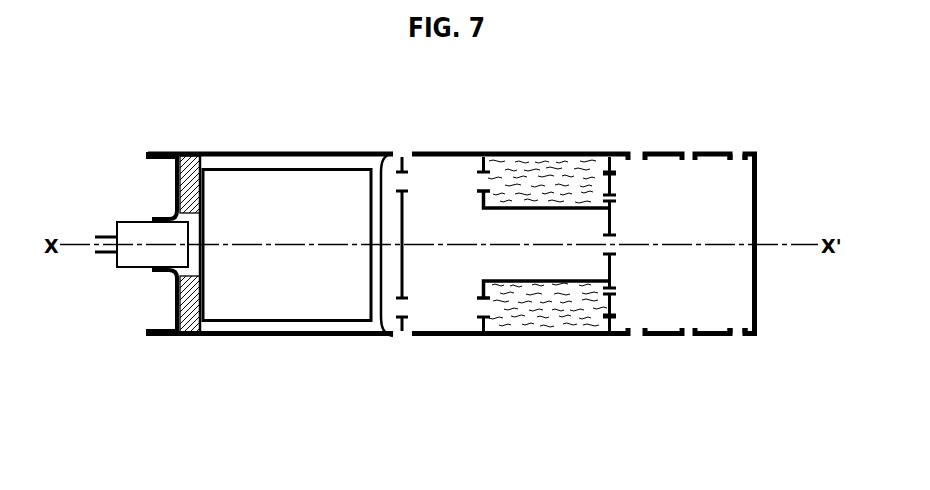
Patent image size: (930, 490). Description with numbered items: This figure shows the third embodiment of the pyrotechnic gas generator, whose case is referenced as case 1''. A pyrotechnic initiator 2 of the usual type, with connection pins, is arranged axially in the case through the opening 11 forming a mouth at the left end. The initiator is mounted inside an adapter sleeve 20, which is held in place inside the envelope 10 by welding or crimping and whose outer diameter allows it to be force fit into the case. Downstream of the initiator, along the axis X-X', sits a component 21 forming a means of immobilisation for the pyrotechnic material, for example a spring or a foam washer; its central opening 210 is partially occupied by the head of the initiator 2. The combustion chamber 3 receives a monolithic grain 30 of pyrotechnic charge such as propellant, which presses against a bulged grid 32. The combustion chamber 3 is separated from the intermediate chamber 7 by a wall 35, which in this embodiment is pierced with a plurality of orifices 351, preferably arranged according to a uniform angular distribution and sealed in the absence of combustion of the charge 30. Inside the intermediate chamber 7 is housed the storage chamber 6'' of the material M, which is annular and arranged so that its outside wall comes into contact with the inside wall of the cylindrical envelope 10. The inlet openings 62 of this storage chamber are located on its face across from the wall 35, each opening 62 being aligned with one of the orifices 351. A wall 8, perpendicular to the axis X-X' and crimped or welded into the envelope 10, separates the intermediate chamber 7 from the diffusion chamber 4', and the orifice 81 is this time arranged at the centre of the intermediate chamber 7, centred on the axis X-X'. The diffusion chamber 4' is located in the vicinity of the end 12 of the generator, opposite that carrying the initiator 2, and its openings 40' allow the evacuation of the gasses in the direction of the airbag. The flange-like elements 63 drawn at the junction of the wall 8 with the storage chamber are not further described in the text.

The case 1'' is at (427, 303).
The pyrotechnic initiator 2 is at (138, 230).
The combustion chamber 3 is at (323, 158).
The diffusion chamber 4' is at (712, 245).
The storage chamber of the material 6'' is at (548, 328).
The intermediate chamber 7 is at (443, 186).
The wall 8 is at (607, 305).
The envelope 10 is at (535, 157).
The opening 11 is at (161, 302).
The end 12 is at (760, 285).
The adapter sleeve 20 is at (177, 192).
The means of immobilisation 21 is at (200, 188).
The monolithic grain 30 is at (330, 296).
The bulged grid 32 is at (383, 320).
The wall 35 is at (405, 266).
The orifices 351 is at (405, 180).
The openings 40' is at (749, 245).
The inlet openings 62 is at (476, 180).
The flange 63 is at (614, 192).
The orifice 81 is at (614, 235).
The central opening 210 is at (201, 258).
The material M is at (562, 171).